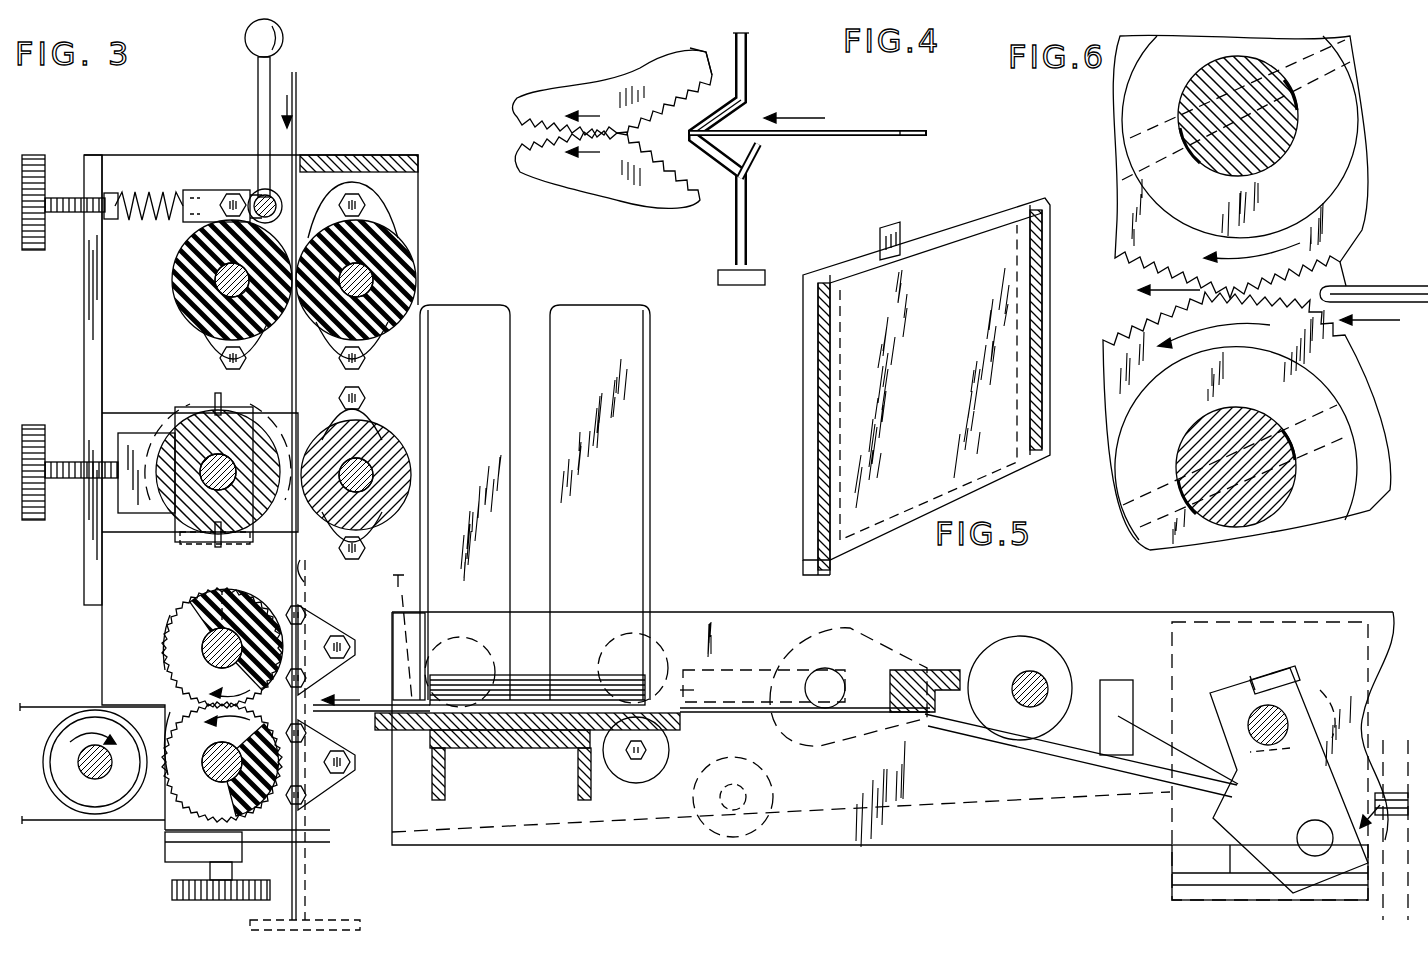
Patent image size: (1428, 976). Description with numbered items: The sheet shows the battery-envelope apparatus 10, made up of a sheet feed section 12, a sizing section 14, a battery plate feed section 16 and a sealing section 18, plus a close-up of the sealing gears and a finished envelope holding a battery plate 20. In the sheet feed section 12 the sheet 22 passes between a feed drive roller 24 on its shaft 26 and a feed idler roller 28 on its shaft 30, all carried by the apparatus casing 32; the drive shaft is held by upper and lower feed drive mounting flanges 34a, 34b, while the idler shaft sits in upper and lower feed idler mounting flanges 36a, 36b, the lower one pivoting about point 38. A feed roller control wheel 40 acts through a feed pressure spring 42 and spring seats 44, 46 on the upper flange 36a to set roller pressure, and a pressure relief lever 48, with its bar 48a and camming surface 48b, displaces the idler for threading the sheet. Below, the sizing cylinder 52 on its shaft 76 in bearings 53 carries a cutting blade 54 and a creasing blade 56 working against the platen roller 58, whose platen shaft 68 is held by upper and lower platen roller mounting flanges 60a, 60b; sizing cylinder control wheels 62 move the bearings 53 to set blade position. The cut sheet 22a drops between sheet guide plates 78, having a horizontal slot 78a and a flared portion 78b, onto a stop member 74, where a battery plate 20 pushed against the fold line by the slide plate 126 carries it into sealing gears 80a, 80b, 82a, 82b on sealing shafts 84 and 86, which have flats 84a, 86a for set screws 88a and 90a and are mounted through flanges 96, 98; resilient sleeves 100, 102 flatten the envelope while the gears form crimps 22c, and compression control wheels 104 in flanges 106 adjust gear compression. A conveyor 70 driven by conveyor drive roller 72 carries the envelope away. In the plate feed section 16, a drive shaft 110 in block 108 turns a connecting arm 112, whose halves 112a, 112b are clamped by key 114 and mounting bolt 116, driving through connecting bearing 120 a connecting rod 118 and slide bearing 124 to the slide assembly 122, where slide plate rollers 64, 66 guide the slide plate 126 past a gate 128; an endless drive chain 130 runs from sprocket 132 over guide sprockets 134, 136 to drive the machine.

In FIG. 3, the apparatus for fabricating battery envelopes 10 is at (416, 137).
In FIG. 3, the sheet feed section 12 is at (72, 300).
In FIG. 3, the sizing section 14 is at (73, 412).
In FIG. 3, the battery plate feed section 16 is at (704, 600).
In FIG. 3, the sealing section 18 is at (96, 665).
In FIG. 3, the battery plate 20 is at (344, 712).
In FIG. 4, the battery plate 20 is at (756, 130).
In FIG. 5, the battery plate 20 is at (956, 255).
In FIG. 6, the battery plate 20 is at (1372, 286).
In FIG. 3, the sheet 22 is at (297, 108).
In FIG. 3, the cut sheet 22a is at (299, 608).
In FIG. 4, the cut sheet 22a is at (700, 72).
In FIG. 6, the cut sheet 22a is at (1350, 282).
In FIG. 5, the continuous crimps 22c is at (1050, 326).
In FIG. 3, the feed drive roller 24 is at (395, 300).
In FIG. 3, the feed drive roller shaft 26 is at (392, 272).
In FIG. 3, the feed idler roller 28 is at (172, 296).
In FIG. 3, the feed idler roller shaft 30 is at (205, 272).
In FIG. 3, the apparatus casing 32 is at (92, 155).
In FIG. 3, the upper feed drive mounting flange 34a is at (392, 212).
In FIG. 3, the lower feed drive mounting flange 34b is at (392, 340).
In FIG. 3, the upper feed idler mounting flange 36a is at (228, 192).
In FIG. 3, the lower feed idler mounting flange 36b is at (206, 346).
In FIG. 3, the point 38 is at (218, 362).
In FIG. 3, the feed roller control wheel 40 is at (32, 155).
In FIG. 3, the feed pressure spring 42 is at (128, 192).
In FIG. 3, the spring seat 44 is at (110, 193).
In FIG. 3, the spring seat 46 is at (190, 190).
In FIG. 3, the pressure relief lever 48 is at (258, 78).
In FIG. 3, the bar 48a is at (282, 200).
In FIG. 3, the flattening camming surface 48b is at (260, 189).
In FIG. 3, the sizing cylinder 52 is at (172, 528).
In FIG. 3, the sizing cylinder shaft bearings 53 is at (275, 414).
In FIG. 3, the cutting blade 54 is at (212, 400).
In FIG. 3, the creasing blade 56 is at (215, 545).
In FIG. 3, the platen roller 58 is at (406, 460).
In FIG. 3, the upper platen roller mounting flange 60a is at (386, 400).
In FIG. 3, the lower platen roller mounting flange 60b is at (388, 546).
In FIG. 3, the sizing cylinder control wheel 62 is at (48, 520).
In FIG. 3, the upper slide plate roller 64 is at (655, 645).
In FIG. 3, the lower slide plate roller 66 is at (670, 752).
In FIG. 3, the platen shaft 68 is at (373, 480).
In FIG. 3, the belt-like conveyor 70 is at (36, 707).
In FIG. 3, the conveyor drive roller 72 is at (40, 778).
In FIG. 3, the stop member 74 is at (350, 920).
In FIG. 4, the stop member 74 is at (726, 270).
In FIG. 3, the sizing cylinder shaft 76 is at (150, 430).
In FIG. 3, the sheet guide plates 78 is at (305, 580).
In FIG. 4, the sheet guide plates 78 is at (750, 50).
In FIG. 4, the horizontal slot 78a is at (744, 112).
In FIG. 4, the flared portion 78b is at (750, 170).
In FIG. 4, the sealing gear 80a is at (582, 92).
In FIG. 6, the sealing gear 80a is at (1196, 262).
In FIG. 3, the sealing gear 80b is at (196, 655).
In FIG. 4, the sealing gear 82a is at (574, 192).
In FIG. 6, the sealing gear 82a is at (1276, 334).
In FIG. 3, the sealing gear 82b is at (192, 728).
In FIG. 3, the upper sealing shaft 84 is at (200, 678).
In FIG. 6, the upper sealing shaft 84 is at (1182, 96).
In FIG. 6, the flat 84a is at (1300, 106).
In FIG. 3, the lower sealing shaft 86 is at (186, 808).
In FIG. 6, the lower sealing shaft 86 is at (1208, 416).
In FIG. 6, the flat 86a is at (1274, 426).
In FIG. 6, the set screw 88a is at (1134, 140).
In FIG. 6, the set screw 90a is at (1146, 500).
In FIG. 3, the sealing shaft mounting flange 96 is at (322, 659).
In FIG. 3, the sealing shaft mounting flange 98 is at (322, 773).
In FIG. 3, the sleeve 100 is at (262, 622).
In FIG. 3, the sleeve 102 is at (250, 820).
In FIG. 3, the compression control wheel 104 is at (172, 890).
In FIG. 3, the flange 106 is at (165, 852).
In FIG. 3, the block 108 is at (1350, 622).
In FIG. 3, the drive shaft 110 is at (1266, 705).
In FIG. 3, the connecting arm 112 is at (1318, 806).
In FIG. 3, the connecting arm half 112a is at (1215, 690).
In FIG. 3, the connecting arm half 112b is at (1278, 668).
In FIG. 3, the key 114 is at (1292, 756).
In FIG. 3, the mounting bolt 116 is at (1300, 668).
In FIG. 3, the connecting rod 118 is at (1112, 758).
In FIG. 3, the connecting bearing 120 is at (1312, 856).
In FIG. 3, the slide assembly 122 is at (938, 672).
In FIG. 3, the slide bearing 124 is at (1036, 670).
In FIG. 3, the slide plate 126 is at (686, 672).
In FIG. 3, the gate 128 is at (418, 702).
In FIG. 3, the endless drive chain 130 is at (392, 598).
In FIG. 3, the sprocket 132 is at (1326, 722).
In FIG. 3, the guide sprocket 134 is at (774, 792).
In FIG. 3, the guide sprocket 136 is at (462, 646).